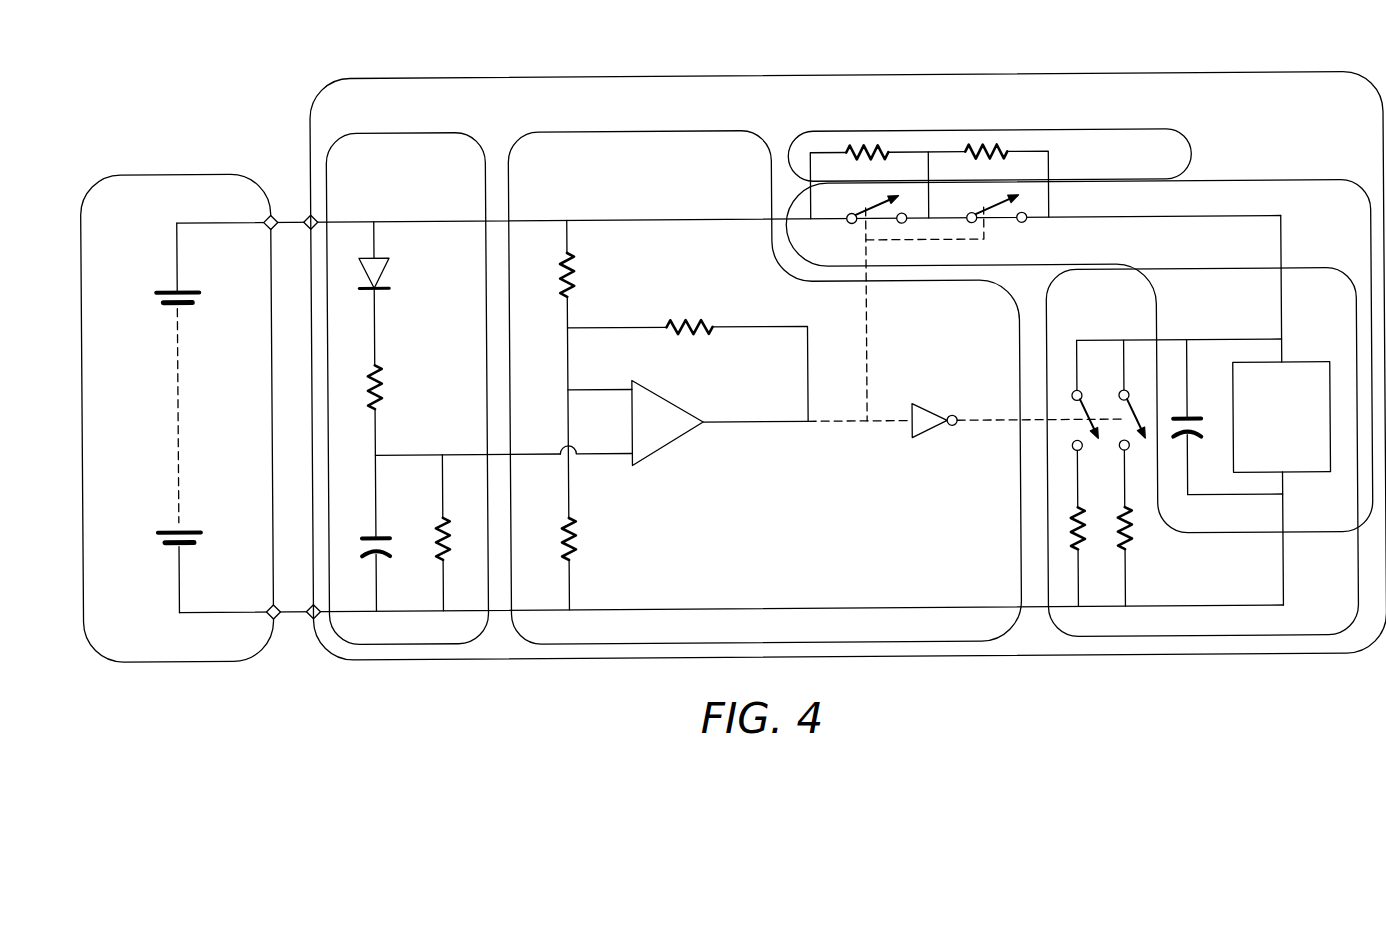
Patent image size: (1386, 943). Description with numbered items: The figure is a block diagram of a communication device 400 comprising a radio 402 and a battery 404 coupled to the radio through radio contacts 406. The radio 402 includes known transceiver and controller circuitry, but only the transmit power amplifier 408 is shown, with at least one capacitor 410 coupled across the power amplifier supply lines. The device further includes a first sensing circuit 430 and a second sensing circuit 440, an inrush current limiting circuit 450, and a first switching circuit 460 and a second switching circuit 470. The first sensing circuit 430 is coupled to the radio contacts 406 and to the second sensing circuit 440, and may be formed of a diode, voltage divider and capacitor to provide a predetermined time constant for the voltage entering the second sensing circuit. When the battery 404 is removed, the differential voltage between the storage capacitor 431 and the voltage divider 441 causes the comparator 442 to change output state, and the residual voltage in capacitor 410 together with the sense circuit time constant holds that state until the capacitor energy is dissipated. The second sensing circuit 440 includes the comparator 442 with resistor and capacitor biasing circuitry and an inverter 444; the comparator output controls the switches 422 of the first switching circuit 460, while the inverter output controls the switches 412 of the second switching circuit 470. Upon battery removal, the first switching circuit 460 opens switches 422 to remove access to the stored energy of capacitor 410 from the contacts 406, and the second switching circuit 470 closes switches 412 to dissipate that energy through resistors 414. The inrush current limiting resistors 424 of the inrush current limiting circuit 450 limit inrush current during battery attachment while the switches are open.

The communication device 400 is at (60, 24).
The radio 402 is at (334, 84).
The battery 404 is at (133, 167).
The radio contacts 406 is at (307, 211).
The transmit power amplifier 408 is at (1295, 365).
The capacitor 410 is at (1195, 418).
The second switching circuit switches 412 is at (1094, 390).
The resistors 414 is at (1081, 549).
The first switching circuit switches 422 is at (990, 210).
The inrush current limiting resistors 424 is at (860, 148).
The first sensing circuit 430 is at (444, 376).
The storage capacitor 431 is at (381, 533).
The second sensing circuit 440 is at (813, 374).
The voltage divider 441 is at (569, 387).
The comparator 442 is at (668, 398).
The inverter 444 is at (935, 408).
The inrush current limiting circuit 450 is at (1175, 130).
The first switching circuit 460 is at (1313, 183).
The second switching circuit 470 is at (1203, 426).